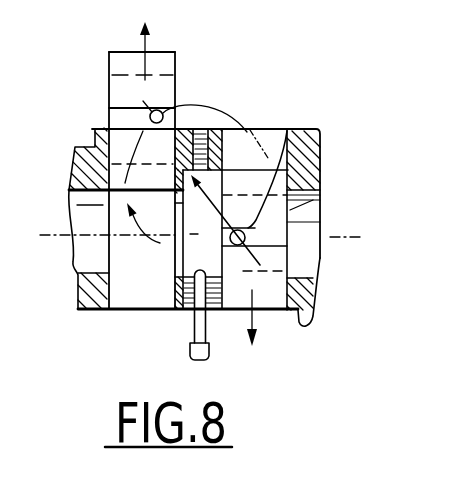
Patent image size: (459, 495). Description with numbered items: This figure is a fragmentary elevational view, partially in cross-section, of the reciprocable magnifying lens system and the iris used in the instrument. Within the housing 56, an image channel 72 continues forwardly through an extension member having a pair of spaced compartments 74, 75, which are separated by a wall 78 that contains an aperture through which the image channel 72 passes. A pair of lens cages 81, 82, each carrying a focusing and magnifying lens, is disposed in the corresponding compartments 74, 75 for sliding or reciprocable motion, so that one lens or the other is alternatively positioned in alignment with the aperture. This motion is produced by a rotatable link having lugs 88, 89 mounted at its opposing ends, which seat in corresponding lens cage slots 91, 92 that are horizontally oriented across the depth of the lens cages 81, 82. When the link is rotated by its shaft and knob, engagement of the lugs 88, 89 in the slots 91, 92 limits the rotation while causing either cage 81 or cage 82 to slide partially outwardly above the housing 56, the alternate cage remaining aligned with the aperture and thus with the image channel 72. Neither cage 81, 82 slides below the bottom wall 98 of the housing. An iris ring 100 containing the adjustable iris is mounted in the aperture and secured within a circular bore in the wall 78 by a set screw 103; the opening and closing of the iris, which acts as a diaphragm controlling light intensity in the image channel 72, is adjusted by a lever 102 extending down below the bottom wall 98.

The housing 56 is at (335, 132).
The image channel 72 is at (79, 262).
The compartment 74 is at (275, 297).
The compartment 75 is at (117, 311).
The wall 78 is at (184, 308).
The lens cage 81 is at (277, 133).
The lens cage 82 is at (177, 51).
The lug 88 is at (255, 228).
The lug 89 is at (150, 126).
The lens cage slot 91 is at (273, 240).
The lens cage slot 92 is at (120, 110).
The bottom wall 98 is at (87, 311).
The iris ring 100 is at (188, 262).
The lever 102 is at (197, 361).
The set screw 103 is at (222, 249).